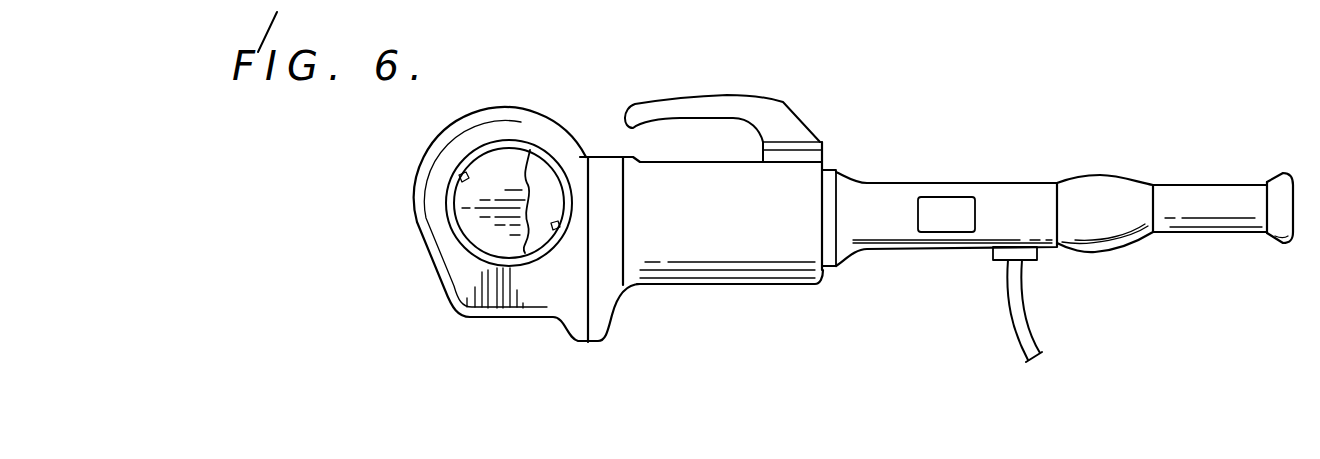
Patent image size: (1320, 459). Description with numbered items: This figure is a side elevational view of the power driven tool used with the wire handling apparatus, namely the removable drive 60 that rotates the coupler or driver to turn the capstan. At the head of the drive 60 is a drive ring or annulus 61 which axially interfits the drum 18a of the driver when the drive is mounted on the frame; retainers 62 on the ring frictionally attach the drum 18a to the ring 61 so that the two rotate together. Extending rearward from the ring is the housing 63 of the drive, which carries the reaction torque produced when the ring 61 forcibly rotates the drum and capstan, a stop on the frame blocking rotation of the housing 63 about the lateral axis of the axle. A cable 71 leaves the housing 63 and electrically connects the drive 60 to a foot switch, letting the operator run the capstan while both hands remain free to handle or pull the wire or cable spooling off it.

The removable drive 60 is at (722, 307).
The drive ring 61 is at (450, 222).
The retainers 62 is at (473, 168).
The drum 18a is at (508, 170).
The housing 63 is at (890, 228).
The cable 71 is at (1040, 332).